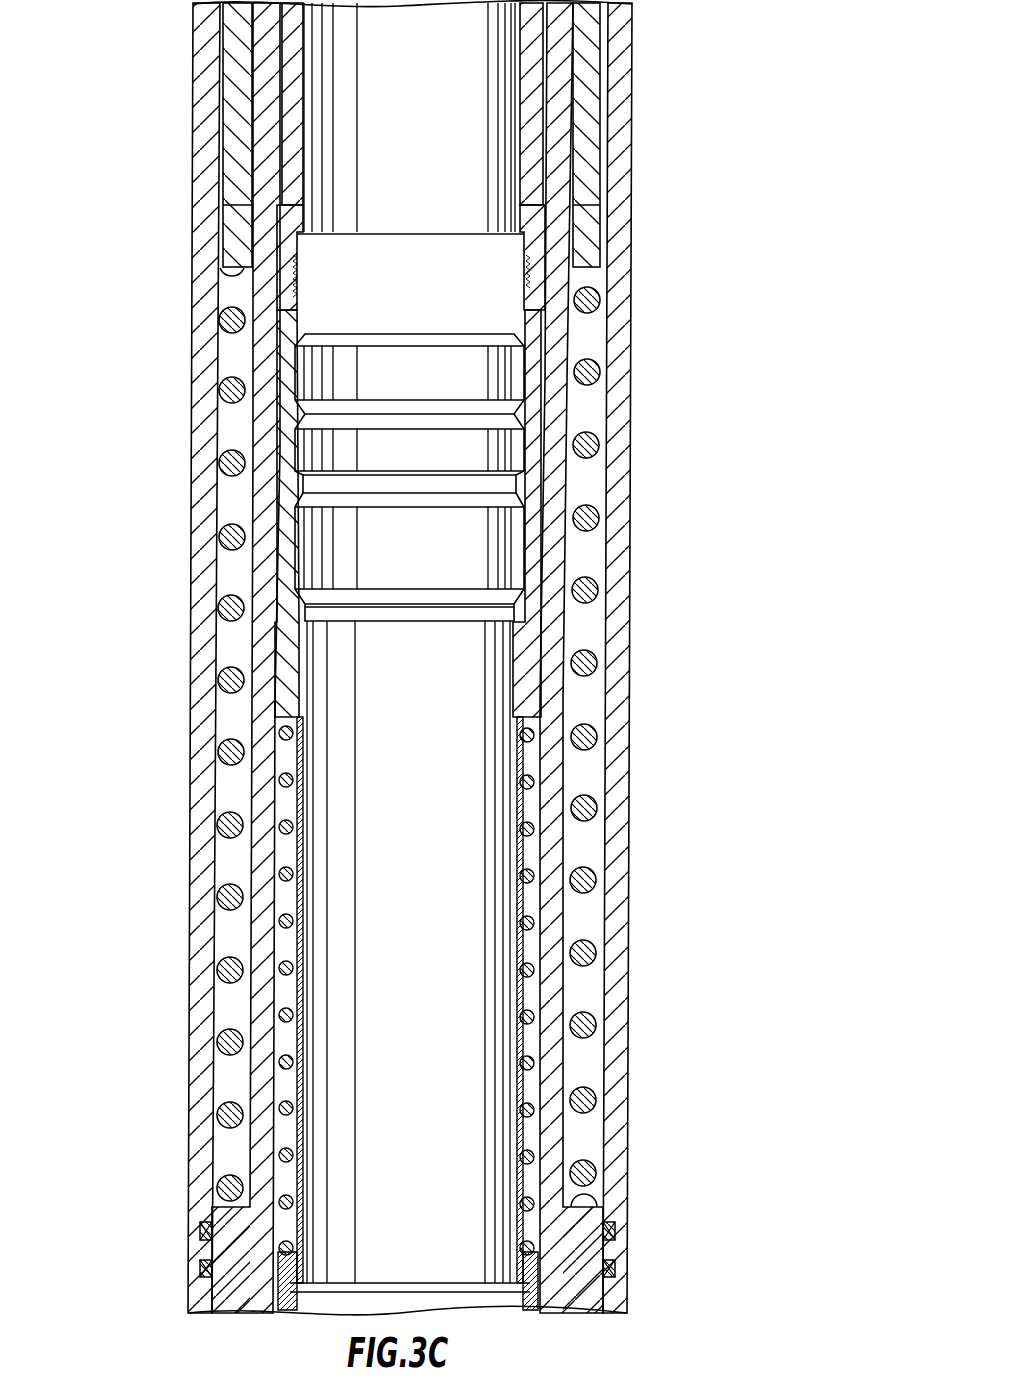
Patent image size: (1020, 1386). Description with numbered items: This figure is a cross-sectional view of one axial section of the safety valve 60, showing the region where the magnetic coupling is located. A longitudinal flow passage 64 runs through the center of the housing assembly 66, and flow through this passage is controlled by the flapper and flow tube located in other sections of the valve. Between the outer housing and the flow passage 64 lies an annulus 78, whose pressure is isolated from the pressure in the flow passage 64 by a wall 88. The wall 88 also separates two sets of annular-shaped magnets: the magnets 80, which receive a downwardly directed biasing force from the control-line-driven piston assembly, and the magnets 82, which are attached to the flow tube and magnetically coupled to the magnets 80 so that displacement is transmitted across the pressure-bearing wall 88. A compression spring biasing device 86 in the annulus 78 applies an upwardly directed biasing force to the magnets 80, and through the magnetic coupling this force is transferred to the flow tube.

The safety valve 60 is at (757, 82).
The longitudinal flow passage 64 is at (520, 1062).
The housing assembly 66 is at (182, 887).
The annulus 78 is at (631, 741).
The annular-shaped magnets 80 is at (603, 150).
The annular-shaped magnets 82 is at (282, 116).
The compression spring biasing device 86 is at (606, 428).
The wall 88 is at (252, 358).